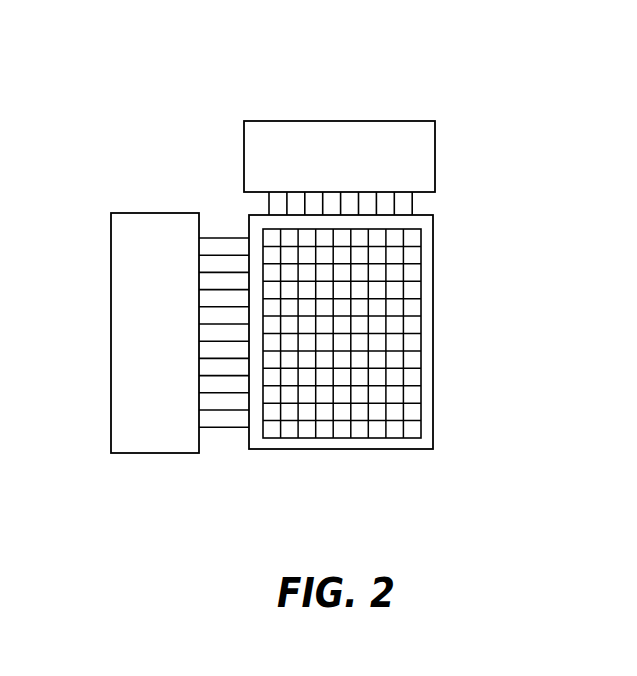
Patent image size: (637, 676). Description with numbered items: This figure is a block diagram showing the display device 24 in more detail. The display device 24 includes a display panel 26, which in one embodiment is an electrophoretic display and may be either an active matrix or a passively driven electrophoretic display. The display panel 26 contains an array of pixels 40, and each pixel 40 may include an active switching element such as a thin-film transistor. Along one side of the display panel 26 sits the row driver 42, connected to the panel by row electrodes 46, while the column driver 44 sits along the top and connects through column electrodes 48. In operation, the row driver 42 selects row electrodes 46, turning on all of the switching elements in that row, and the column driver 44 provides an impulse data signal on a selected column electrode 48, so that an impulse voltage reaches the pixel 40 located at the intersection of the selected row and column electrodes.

The display device 24 is at (145, 83).
The display panel 26 is at (421, 343).
The pixel 40 is at (343, 429).
The row driver 42 is at (148, 213).
The column driver 44 is at (421, 121).
The row electrodes 46 is at (232, 237).
The column electrode 48 is at (413, 203).